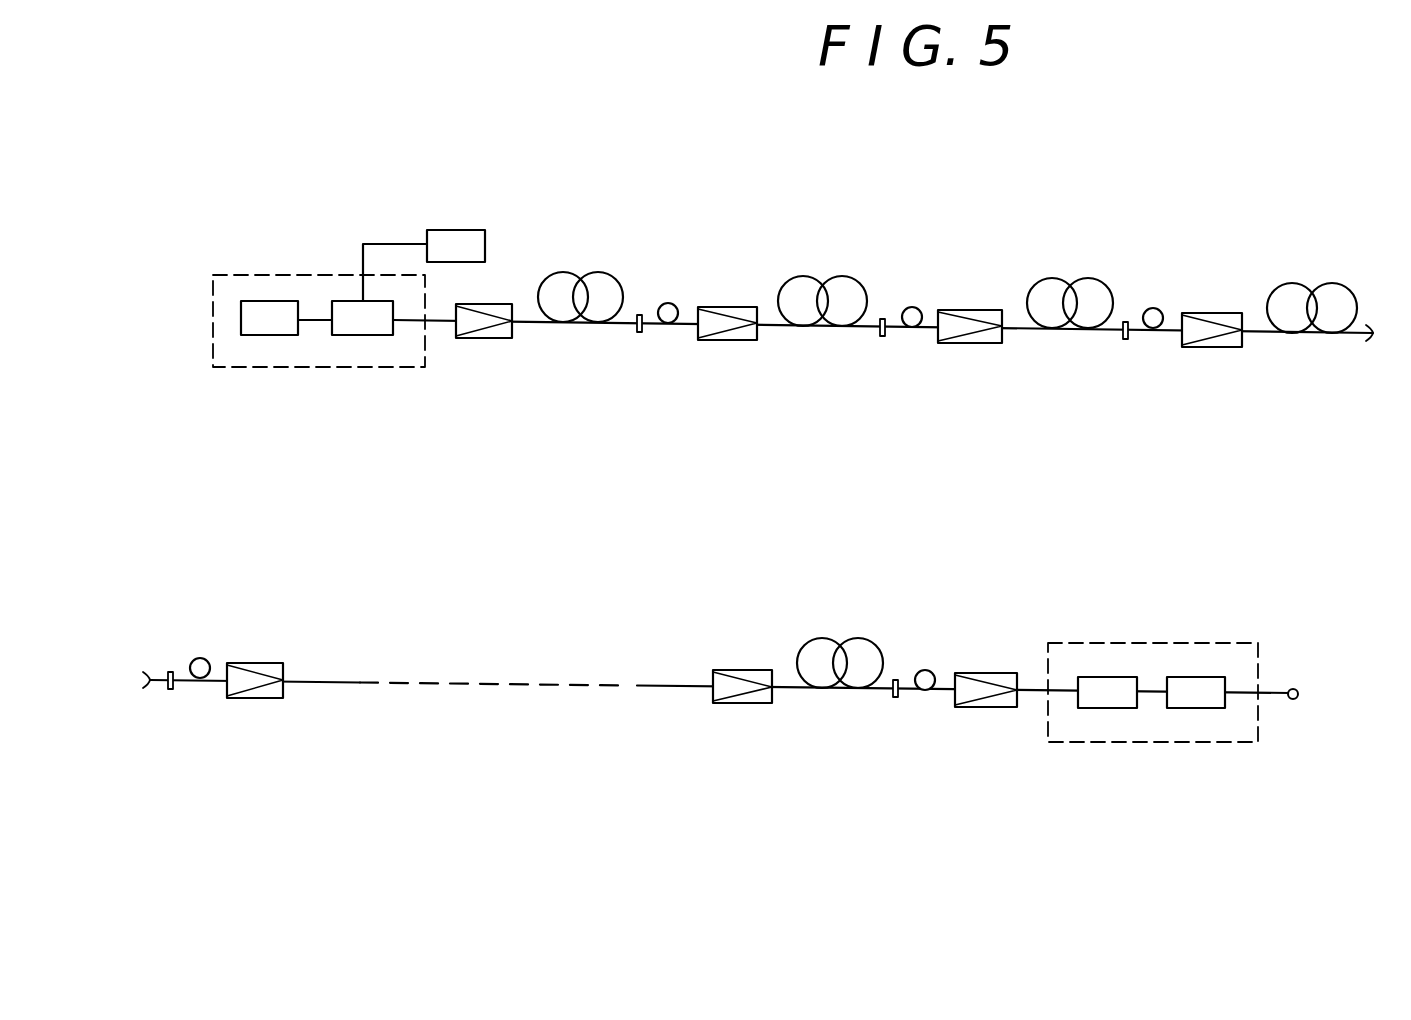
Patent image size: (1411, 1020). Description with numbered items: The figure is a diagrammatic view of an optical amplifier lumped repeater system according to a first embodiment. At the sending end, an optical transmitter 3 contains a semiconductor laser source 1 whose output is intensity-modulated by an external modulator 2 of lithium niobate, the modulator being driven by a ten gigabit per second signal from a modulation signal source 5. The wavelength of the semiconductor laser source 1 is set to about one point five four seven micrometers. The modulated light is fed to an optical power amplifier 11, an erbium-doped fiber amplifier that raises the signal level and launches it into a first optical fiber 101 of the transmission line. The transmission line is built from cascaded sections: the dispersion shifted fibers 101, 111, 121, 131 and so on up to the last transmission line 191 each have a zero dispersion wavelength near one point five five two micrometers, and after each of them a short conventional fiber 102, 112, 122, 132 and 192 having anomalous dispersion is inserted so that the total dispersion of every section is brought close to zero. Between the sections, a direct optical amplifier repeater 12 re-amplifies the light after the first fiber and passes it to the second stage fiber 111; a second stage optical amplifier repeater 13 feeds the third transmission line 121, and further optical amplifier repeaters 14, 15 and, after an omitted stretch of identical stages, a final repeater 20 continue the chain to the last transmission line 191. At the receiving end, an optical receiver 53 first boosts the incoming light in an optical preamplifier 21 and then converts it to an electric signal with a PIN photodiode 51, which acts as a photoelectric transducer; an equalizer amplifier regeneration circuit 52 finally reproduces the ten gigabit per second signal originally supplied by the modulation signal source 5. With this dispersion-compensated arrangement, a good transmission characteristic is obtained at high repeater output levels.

The semiconductor laser source 1 is at (265, 336).
The external modulator 2 is at (358, 336).
The optical transmitter 3 is at (289, 272).
The modulation signal source 5 is at (461, 230).
The optical power amplifier 11 is at (485, 339).
The direct optical amplifier repeater 12 is at (728, 341).
The second stage optical amplifier repeater 13 is at (960, 344).
The optical amplifier repeater 14 is at (1207, 348).
The optical amplifier repeater 15 is at (262, 699).
The optical amplifier repeater 20 is at (737, 704).
The optical preamplifier 21 is at (975, 708).
The PIN photodiode 51 is at (1100, 709).
The equalizer amplifier regeneration circuit 52 is at (1195, 709).
The optical receiver 53 is at (1126, 642).
The first optical fiber 101 is at (583, 272).
The conventional fiber 102 is at (675, 303).
The second stage optical fiber 111 is at (822, 282).
The conventional fiber 112 is at (913, 306).
The third transmission line 121 is at (1063, 284).
The conventional fiber 122 is at (1155, 308).
The optical fiber 131 is at (1303, 284).
The conventional fiber 132 is at (207, 660).
The last transmission line 191 is at (838, 640).
The conventional fiber 192 is at (928, 669).